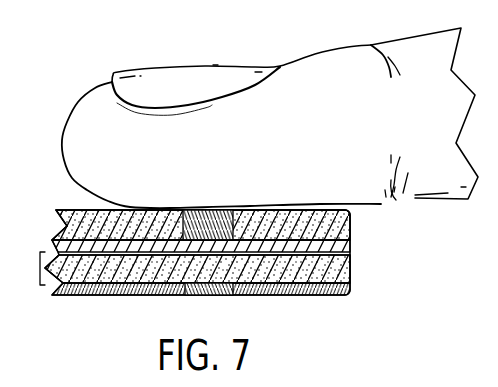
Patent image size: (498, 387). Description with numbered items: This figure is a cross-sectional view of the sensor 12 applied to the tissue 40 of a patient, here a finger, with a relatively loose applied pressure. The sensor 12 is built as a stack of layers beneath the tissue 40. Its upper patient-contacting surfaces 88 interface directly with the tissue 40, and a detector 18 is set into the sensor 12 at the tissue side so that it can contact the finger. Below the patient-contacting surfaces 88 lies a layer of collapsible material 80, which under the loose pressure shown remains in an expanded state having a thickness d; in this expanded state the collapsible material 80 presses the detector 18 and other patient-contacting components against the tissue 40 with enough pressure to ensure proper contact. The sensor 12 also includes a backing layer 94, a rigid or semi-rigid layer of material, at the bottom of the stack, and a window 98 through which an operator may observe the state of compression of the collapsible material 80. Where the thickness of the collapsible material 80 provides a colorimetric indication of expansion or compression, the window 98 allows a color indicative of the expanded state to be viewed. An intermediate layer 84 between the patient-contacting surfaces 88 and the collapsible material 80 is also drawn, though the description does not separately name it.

The sensor 12 is at (399, 278).
The detector 18 is at (217, 210).
The tissue 40 is at (358, 45).
The collapsible material 80 is at (350, 268).
The intermediate layer 84 is at (350, 243).
The patient-contacting surfaces 88 is at (75, 210).
The backing layer 94 is at (117, 295).
The window 98 is at (213, 297).
The thickness d is at (36, 268).